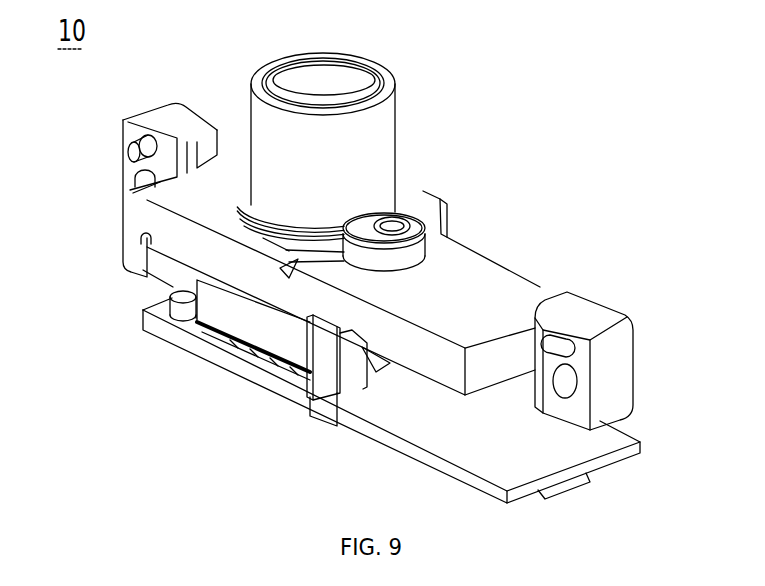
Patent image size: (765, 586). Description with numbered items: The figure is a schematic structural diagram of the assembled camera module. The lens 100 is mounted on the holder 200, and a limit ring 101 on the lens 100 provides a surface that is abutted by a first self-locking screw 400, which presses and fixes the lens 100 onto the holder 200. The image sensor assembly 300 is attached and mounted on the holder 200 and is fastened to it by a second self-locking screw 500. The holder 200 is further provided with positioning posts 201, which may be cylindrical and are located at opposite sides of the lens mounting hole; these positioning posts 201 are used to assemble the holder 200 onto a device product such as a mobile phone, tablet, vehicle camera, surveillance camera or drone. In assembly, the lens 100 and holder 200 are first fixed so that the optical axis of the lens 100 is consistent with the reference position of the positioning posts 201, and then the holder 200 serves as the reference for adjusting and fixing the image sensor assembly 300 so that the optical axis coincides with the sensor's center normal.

The lens 100 is at (406, 118).
The limit ring 101 is at (240, 231).
The holder 200 is at (475, 277).
The positioning post 201 is at (573, 332).
The image sensor assembly 300 is at (439, 439).
The first self-locking screw 400 is at (407, 212).
The second self-locking screw 500 is at (307, 437).